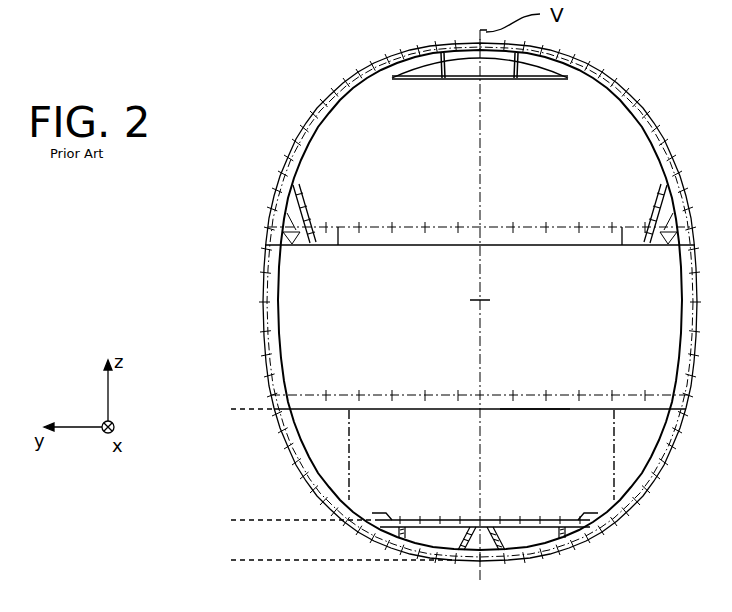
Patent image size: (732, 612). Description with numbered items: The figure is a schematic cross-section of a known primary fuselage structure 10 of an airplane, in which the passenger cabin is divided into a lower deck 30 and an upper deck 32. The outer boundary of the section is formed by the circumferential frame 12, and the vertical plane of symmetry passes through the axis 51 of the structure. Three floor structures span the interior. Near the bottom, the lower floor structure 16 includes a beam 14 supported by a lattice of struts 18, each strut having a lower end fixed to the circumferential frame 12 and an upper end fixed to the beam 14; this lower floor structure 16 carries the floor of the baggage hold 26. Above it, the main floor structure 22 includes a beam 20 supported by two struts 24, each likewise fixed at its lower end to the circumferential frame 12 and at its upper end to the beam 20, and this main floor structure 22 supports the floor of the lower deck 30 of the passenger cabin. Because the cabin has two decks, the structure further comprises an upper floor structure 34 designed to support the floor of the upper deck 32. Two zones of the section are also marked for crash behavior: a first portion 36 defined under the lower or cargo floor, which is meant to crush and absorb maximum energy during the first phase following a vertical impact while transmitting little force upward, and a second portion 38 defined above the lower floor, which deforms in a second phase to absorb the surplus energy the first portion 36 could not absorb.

The primary fuselage structure 10 is at (625, 91).
The circumferential frame 12 is at (338, 101).
The beam 14 is at (535, 518).
The lower floor structure 16 is at (429, 519).
The struts 18 is at (461, 540).
The beam 20 is at (535, 410).
The main floor structure 22 is at (462, 410).
The struts 24 is at (350, 451).
The baggage hold 26 is at (513, 444).
The lower deck 30 is at (458, 327).
The upper deck 32 is at (448, 182).
The upper floor structure 34 is at (386, 247).
The first portion 36 is at (231, 520).
The second portion 38 is at (231, 409).
The axis 51 is at (490, 300).